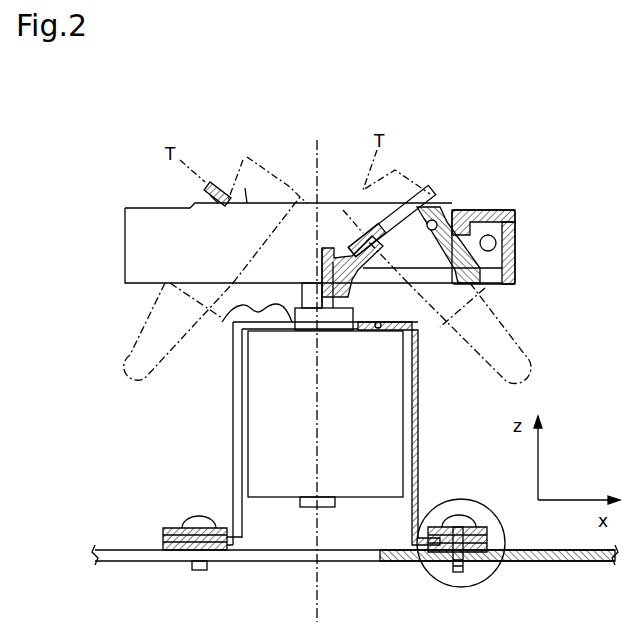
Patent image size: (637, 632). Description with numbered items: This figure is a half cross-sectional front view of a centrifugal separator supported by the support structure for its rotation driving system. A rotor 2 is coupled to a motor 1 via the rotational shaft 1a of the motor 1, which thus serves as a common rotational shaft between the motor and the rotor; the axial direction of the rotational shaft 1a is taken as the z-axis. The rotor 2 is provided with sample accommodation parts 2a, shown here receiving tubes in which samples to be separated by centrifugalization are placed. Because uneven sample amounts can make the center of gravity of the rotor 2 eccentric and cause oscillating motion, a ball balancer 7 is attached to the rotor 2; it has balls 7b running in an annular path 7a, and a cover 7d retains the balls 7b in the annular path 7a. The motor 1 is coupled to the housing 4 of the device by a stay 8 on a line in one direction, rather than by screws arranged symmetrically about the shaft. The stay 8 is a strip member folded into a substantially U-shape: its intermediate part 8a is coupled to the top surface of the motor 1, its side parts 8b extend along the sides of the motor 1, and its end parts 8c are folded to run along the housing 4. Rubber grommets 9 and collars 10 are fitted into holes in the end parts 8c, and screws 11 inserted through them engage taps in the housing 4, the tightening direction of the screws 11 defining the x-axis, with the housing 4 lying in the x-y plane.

The motor 1 is at (300, 393).
The rotational shaft 1a is at (350, 292).
The rotor 2 is at (247, 200).
The sample accommodation parts 2a is at (425, 207).
The housing 4 is at (305, 562).
The ball balancer 7 is at (522, 212).
The annular path 7a is at (505, 284).
The balls 7b is at (500, 243).
The cover 7d is at (490, 214).
The stay 8 is at (232, 357).
The intermediate part 8a is at (305, 326).
The side parts 8b is at (240, 435).
The end parts 8c is at (170, 530).
The rubber grommets 9 is at (445, 568).
The collars 10 is at (480, 562).
The screws 11 is at (198, 516).